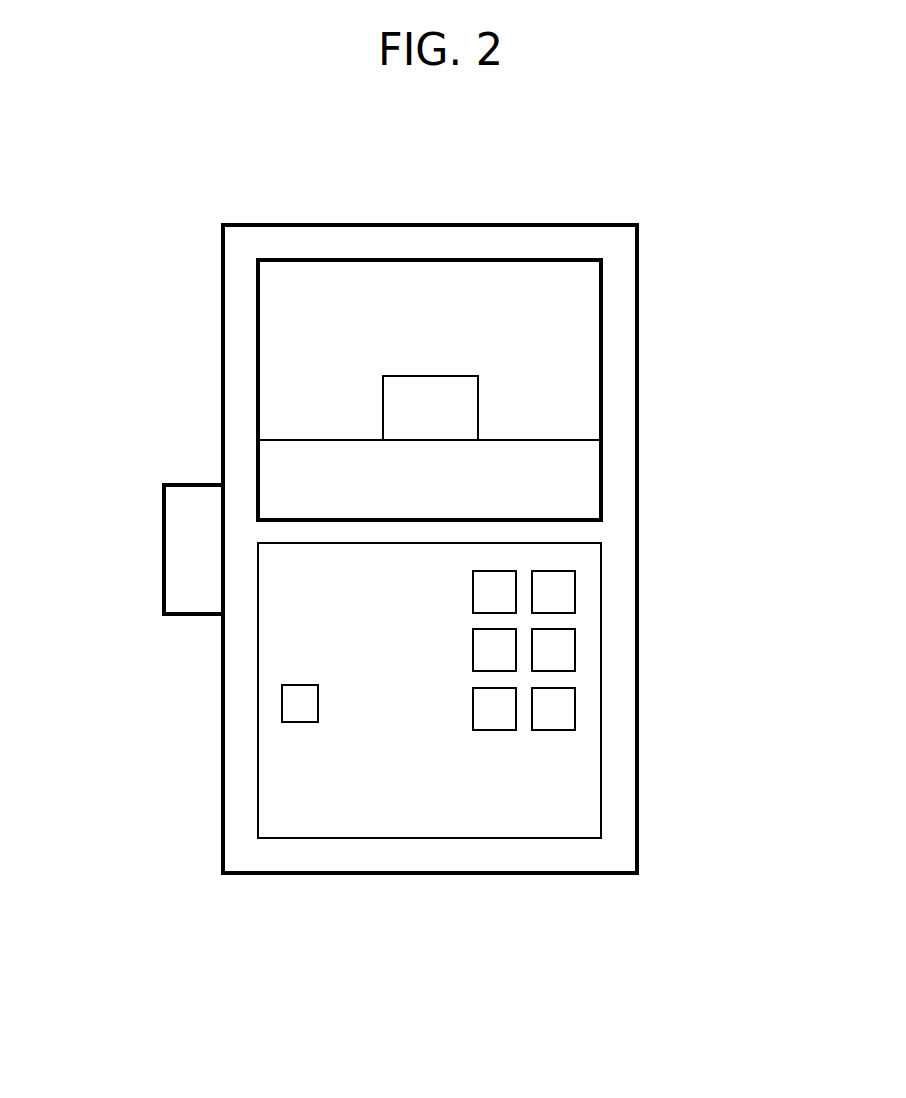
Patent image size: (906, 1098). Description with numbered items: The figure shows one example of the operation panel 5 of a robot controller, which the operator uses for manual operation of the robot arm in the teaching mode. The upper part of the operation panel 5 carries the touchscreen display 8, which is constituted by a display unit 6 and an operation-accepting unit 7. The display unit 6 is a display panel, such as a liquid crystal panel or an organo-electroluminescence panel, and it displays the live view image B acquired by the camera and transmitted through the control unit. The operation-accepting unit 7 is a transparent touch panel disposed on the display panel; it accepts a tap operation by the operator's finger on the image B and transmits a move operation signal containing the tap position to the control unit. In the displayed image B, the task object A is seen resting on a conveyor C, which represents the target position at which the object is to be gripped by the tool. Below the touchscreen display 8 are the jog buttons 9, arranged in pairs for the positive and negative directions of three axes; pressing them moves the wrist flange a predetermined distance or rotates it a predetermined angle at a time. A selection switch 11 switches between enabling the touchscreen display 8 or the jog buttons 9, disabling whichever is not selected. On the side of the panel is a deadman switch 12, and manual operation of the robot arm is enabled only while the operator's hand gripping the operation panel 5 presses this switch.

The operation panel 5 is at (637, 527).
The touchscreen display 8 is at (514, 390).
The display unit 6 is at (429, 390).
The operation-accepting unit 7 is at (602, 309).
The jog buttons 9 is at (527, 742).
The selection switch 11 is at (282, 697).
The deadman switch 12 is at (164, 550).
The task object A is at (428, 376).
The image B is at (474, 353).
The conveyor C is at (311, 440).